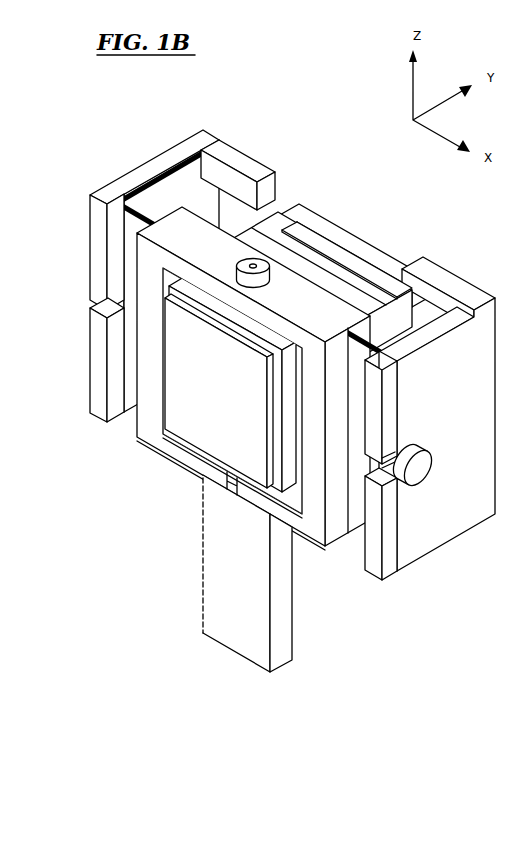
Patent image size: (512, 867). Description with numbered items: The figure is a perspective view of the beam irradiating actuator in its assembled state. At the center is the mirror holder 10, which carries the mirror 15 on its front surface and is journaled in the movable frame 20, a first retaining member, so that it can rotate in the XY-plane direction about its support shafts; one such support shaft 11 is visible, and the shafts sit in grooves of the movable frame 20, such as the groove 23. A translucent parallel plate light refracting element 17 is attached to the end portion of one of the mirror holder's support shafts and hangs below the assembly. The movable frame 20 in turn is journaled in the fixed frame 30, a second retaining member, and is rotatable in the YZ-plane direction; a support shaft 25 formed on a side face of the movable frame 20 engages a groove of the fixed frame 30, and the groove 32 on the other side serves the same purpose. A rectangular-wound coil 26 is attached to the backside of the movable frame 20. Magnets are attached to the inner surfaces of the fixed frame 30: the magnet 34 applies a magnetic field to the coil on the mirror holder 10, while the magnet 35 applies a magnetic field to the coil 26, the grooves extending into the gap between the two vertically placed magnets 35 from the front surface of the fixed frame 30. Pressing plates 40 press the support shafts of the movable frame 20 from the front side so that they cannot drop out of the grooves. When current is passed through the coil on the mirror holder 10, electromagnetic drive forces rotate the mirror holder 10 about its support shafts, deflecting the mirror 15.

The mirror holder 10 is at (283, 337).
The support shaft 11 is at (335, 261).
The mirror 15 is at (195, 437).
The parallel plate light refracting element 17 is at (237, 620).
The movable frame 20 is at (170, 233).
The groove 23 is at (220, 474).
The support shaft 25 is at (432, 455).
The coil 26 is at (252, 260).
The fixed frame 30 is at (420, 545).
The groove 32 is at (84, 306).
The magnet 34 is at (362, 278).
The magnet 35 is at (205, 165).
The pressing plate 40 is at (126, 410).